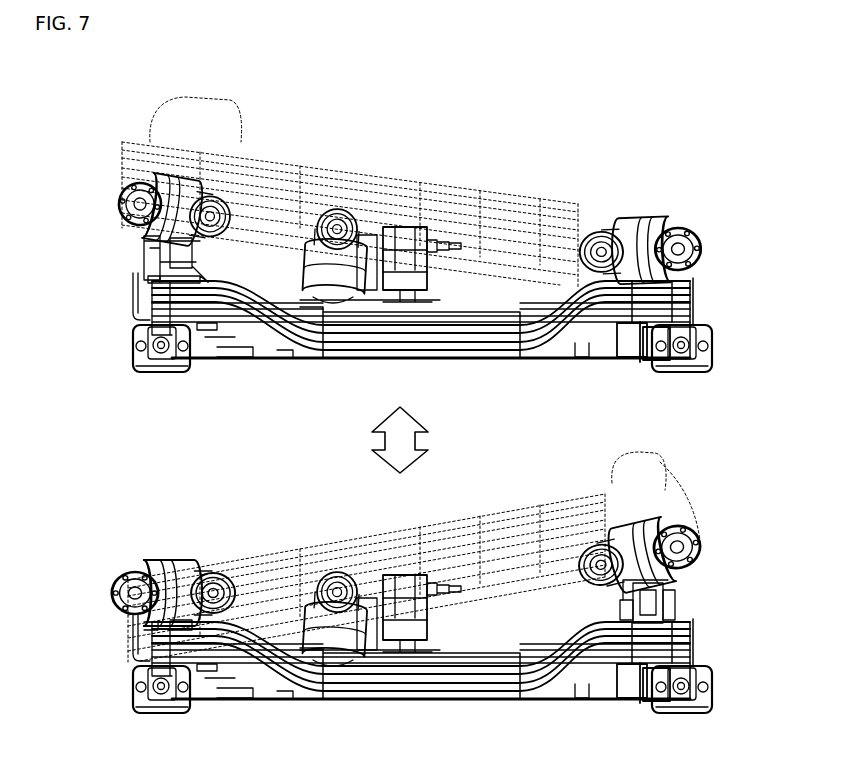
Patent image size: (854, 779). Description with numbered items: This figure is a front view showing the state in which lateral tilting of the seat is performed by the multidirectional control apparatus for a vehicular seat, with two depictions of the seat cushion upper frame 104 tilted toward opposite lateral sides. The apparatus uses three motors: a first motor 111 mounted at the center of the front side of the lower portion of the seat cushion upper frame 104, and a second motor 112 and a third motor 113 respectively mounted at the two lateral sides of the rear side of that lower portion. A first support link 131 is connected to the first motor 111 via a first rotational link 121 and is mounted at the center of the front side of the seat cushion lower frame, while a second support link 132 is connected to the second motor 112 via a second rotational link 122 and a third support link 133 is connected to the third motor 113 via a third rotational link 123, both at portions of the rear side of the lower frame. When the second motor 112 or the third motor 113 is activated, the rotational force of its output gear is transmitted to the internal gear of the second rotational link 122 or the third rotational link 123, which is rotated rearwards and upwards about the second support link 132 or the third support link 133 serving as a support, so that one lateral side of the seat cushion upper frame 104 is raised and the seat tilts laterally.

The seat cushion upper frame 104 is at (248, 157).
The first motor 111 is at (312, 237).
The second motor 112 is at (622, 230).
The third motor 113 is at (187, 192).
The first rotational link 121 is at (413, 230).
The second rotational link 122 is at (642, 597).
The third rotational link 123 is at (150, 277).
The first support link 131 is at (422, 263).
The second support link 132 is at (668, 604).
The third support link 133 is at (150, 238).